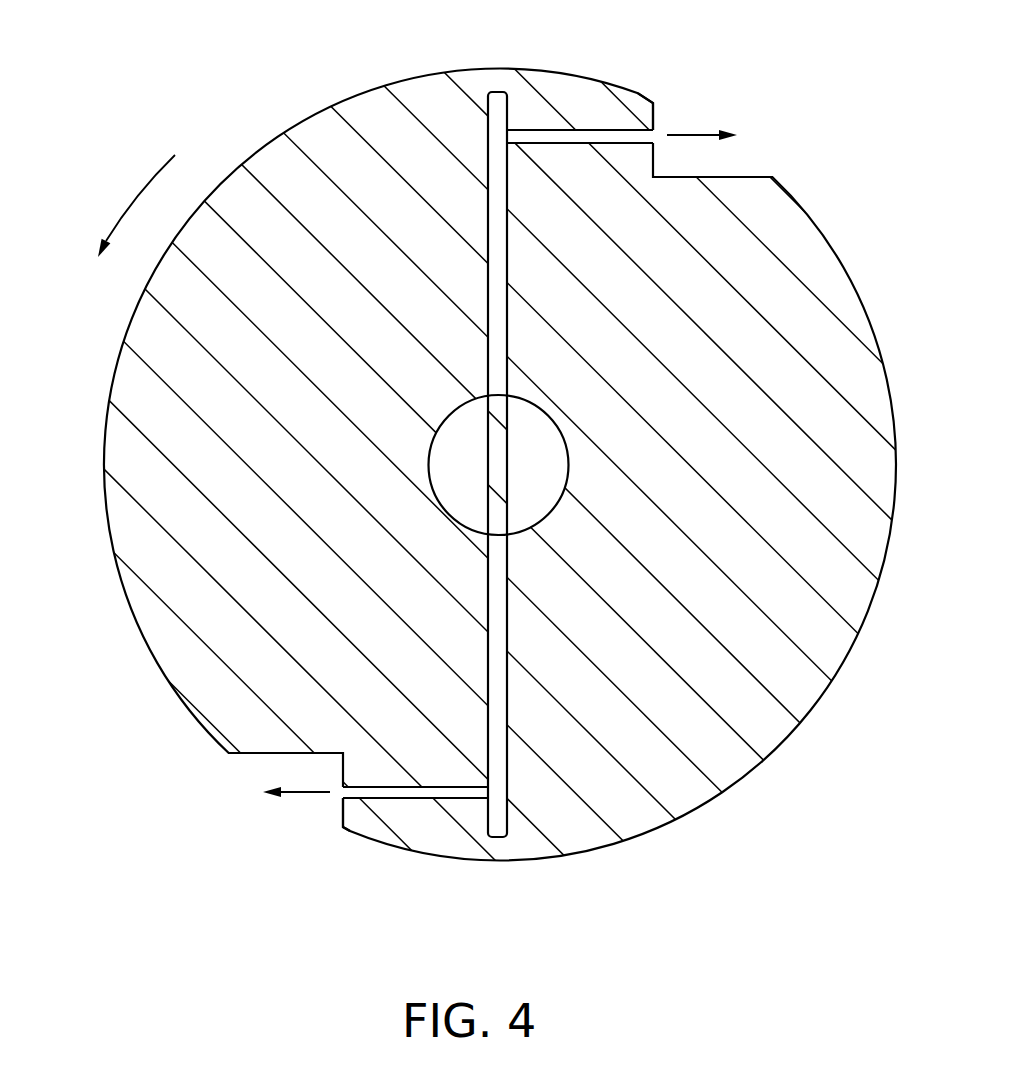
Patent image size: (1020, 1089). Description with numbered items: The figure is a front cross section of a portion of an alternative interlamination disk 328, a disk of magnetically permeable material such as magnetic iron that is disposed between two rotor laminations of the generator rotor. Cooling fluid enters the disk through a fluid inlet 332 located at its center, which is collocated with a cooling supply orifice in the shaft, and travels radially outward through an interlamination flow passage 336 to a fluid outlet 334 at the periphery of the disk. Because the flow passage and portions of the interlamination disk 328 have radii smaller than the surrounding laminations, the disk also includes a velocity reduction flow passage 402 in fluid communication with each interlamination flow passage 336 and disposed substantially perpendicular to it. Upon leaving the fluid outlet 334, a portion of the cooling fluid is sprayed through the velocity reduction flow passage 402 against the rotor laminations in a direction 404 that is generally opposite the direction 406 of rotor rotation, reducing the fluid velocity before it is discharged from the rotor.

The interlamination disk 328 is at (330, 110).
The fluid inlet 332 is at (498, 397).
The fluid outlet 334 is at (508, 138).
The interlamination flow passage 336 is at (507, 293).
The velocity reduction flow passage 402 is at (603, 137).
The spray direction 404 is at (135, 198).
The rotor rotation direction 406 is at (698, 134).